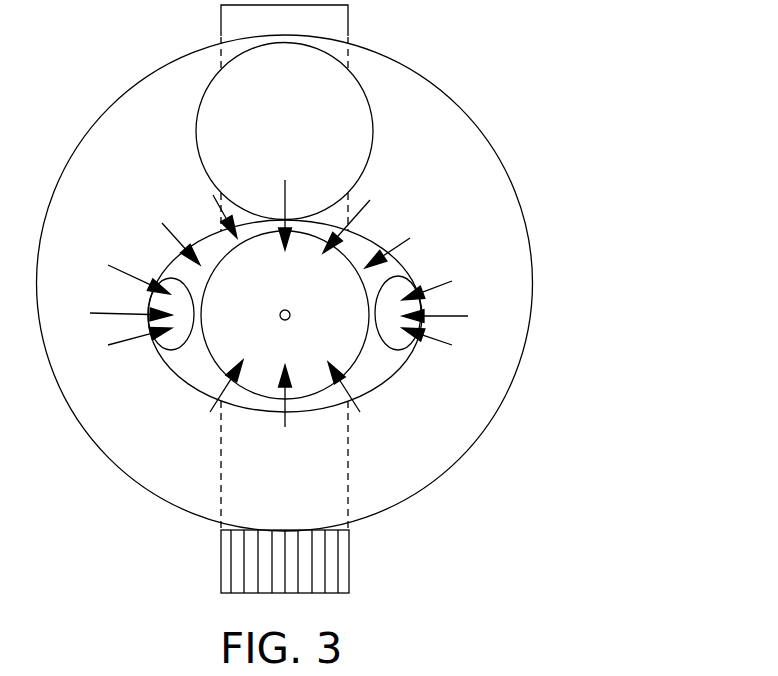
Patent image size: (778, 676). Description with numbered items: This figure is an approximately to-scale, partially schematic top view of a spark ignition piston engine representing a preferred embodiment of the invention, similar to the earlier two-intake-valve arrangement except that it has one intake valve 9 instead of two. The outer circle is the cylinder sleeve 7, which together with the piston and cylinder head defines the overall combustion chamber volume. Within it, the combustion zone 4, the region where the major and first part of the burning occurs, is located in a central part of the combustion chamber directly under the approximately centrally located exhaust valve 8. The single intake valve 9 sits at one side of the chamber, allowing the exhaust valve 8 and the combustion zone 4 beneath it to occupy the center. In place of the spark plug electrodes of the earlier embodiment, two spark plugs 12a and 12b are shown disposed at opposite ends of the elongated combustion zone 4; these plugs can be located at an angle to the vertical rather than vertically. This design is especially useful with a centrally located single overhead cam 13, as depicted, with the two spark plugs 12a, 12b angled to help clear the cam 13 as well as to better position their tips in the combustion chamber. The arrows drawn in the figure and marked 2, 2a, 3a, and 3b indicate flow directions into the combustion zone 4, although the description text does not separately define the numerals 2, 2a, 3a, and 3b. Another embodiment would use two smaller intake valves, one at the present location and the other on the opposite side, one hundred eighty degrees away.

The exhaust gas flow arrows (left side) 2 is at (107, 312).
The exhaust gas flow arrows (right side) 2a is at (455, 310).
The gas flow from upper duct 3a is at (357, 212).
The gas flow from lower duct 3b is at (282, 418).
The combustion zone 4 is at (387, 272).
The cylinder sleeve 7 is at (525, 213).
The exhaust valve 8 is at (355, 368).
The intake valve 9 is at (373, 146).
The spark plug 12a is at (153, 347).
The spark plug 12b is at (418, 343).
The single overhead cam 13 is at (350, 558).